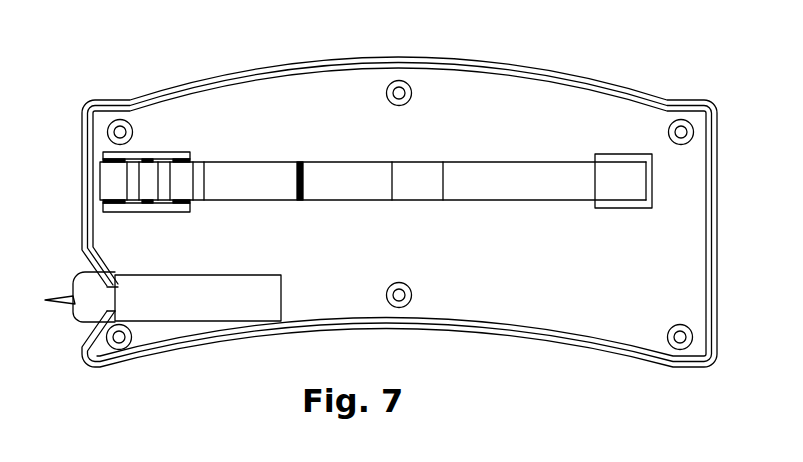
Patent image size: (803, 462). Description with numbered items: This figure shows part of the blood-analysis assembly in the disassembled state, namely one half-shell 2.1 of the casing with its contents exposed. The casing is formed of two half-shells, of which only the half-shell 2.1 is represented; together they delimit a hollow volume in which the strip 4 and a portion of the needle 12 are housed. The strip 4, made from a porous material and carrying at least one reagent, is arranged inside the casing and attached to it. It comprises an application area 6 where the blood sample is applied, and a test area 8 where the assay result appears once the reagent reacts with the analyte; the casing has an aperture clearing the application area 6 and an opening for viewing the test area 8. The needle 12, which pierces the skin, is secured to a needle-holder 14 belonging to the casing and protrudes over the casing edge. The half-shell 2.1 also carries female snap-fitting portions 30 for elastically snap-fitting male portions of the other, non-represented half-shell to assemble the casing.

The half-shell 2.1 is at (443, 95).
The strip 4 is at (370, 177).
The application area 6 is at (617, 168).
The test area 8 is at (328, 185).
The needle 12 is at (63, 296).
The needle-holder 14 is at (87, 310).
The female snap-fitting portions 30 is at (683, 128).